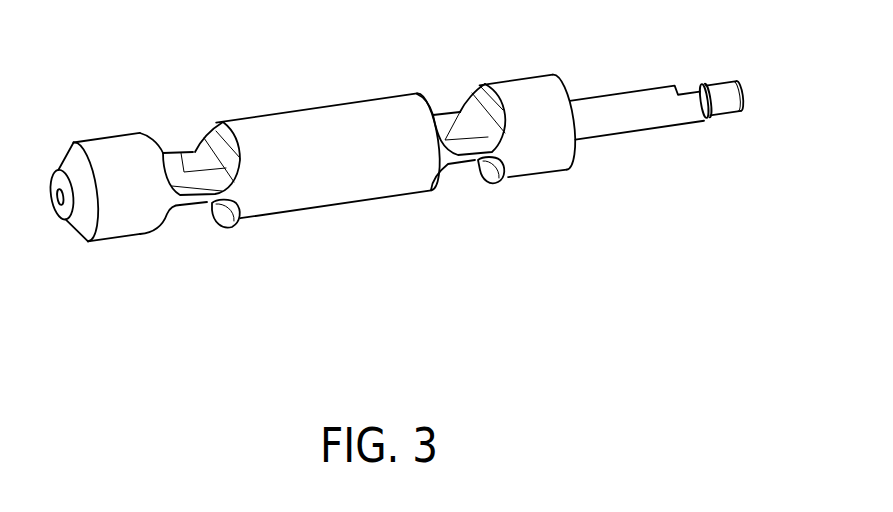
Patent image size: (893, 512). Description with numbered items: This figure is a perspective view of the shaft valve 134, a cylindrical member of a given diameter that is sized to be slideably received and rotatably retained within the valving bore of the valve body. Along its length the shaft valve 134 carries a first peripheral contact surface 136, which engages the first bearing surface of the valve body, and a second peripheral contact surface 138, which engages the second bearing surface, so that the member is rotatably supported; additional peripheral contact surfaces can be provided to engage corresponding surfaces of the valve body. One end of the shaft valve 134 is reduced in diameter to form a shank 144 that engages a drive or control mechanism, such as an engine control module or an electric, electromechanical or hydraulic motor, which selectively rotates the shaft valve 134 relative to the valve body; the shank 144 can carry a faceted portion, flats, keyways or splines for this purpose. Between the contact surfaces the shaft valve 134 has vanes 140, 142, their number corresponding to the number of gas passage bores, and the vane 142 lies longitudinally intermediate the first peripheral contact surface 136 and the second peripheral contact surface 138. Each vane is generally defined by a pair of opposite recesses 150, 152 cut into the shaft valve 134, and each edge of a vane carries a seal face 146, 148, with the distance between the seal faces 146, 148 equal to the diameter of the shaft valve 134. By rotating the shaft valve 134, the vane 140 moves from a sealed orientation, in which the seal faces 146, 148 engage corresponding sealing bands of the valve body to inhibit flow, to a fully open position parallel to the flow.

The shaft valve 134 is at (337, 113).
The first peripheral contact surface 136 is at (343, 178).
The second peripheral contact surface 138 is at (531, 148).
The vane 140 is at (182, 170).
The vane 142 is at (460, 123).
The shank 144 is at (712, 85).
The seal face 146 is at (205, 200).
The seal face 148 is at (181, 152).
The recess 150 is at (188, 210).
The recess 152 is at (163, 152).